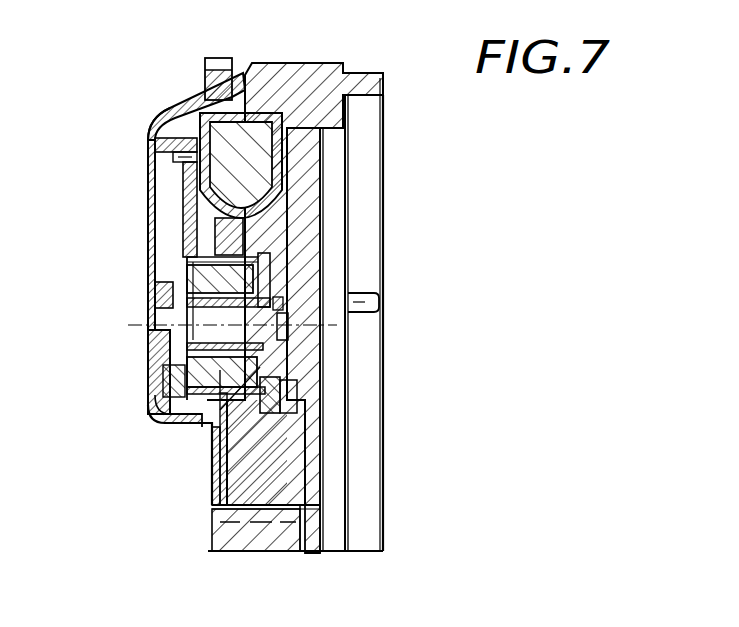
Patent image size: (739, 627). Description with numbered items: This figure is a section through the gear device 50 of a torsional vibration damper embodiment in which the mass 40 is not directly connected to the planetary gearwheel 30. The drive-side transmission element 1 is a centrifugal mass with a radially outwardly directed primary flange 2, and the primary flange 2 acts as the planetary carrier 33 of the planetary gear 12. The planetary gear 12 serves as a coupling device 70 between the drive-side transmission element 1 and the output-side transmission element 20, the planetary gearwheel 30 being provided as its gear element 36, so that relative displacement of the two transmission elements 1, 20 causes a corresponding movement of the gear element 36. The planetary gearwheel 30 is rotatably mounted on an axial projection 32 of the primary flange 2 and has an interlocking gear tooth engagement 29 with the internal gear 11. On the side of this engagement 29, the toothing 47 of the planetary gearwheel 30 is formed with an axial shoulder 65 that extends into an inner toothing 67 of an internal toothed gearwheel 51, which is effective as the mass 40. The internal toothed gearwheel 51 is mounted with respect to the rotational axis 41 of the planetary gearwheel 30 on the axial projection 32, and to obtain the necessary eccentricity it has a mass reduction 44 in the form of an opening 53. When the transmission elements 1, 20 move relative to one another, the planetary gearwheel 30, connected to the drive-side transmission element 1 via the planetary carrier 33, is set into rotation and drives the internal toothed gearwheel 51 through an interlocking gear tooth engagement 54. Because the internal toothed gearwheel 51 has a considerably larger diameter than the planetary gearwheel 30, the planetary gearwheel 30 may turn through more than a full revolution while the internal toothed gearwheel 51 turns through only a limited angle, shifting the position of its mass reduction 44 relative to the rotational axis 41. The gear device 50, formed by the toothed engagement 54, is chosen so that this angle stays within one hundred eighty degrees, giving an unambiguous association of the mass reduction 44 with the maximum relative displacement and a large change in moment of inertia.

The drive-side transmission element 1 is at (180, 110).
The primary flange 2 is at (148, 173).
The internal gear 11 is at (333, 145).
The planetary gear 12 is at (313, 283).
The output-side transmission element 20 is at (333, 224).
The interlocking gear tooth engagement 29 is at (287, 292).
The planetary gearwheel 30 is at (282, 391).
The axial projection 32 is at (142, 265).
The planetary carrier 33 is at (347, 216).
The gear element 36 is at (280, 373).
The mass 40 is at (162, 425).
The rotational axis 41 is at (148, 310).
The mass reduction 44 is at (158, 214).
The toothing 47 is at (262, 440).
The gear device 50 is at (200, 427).
The internal toothed gearwheel 51 is at (148, 373).
The opening 53 is at (154, 193).
The interlocking gear tooth engagement 54 is at (205, 420).
The axial shoulder 65 is at (210, 442).
The inner toothing 67 is at (153, 121).
The coupling device 70 is at (165, 406).